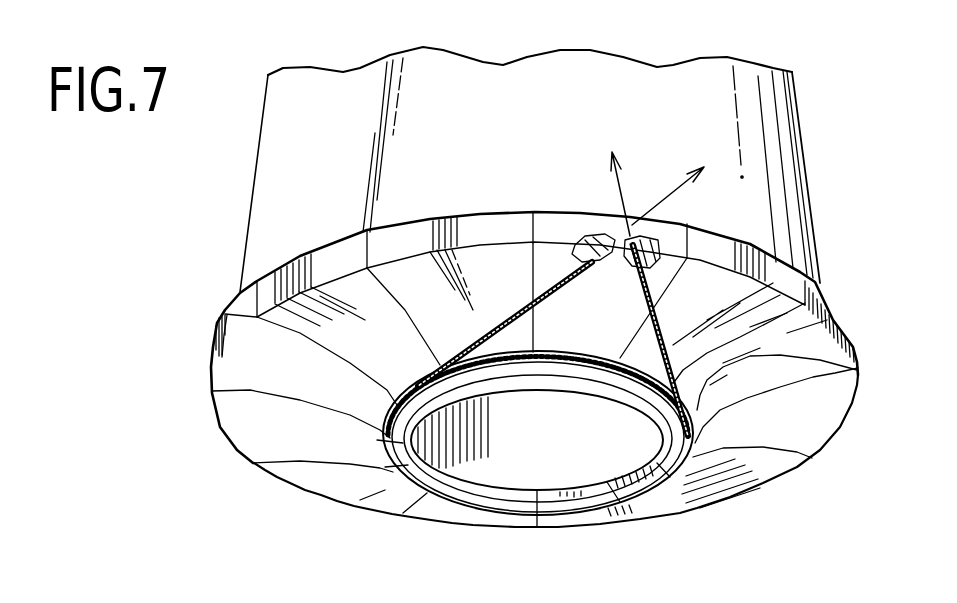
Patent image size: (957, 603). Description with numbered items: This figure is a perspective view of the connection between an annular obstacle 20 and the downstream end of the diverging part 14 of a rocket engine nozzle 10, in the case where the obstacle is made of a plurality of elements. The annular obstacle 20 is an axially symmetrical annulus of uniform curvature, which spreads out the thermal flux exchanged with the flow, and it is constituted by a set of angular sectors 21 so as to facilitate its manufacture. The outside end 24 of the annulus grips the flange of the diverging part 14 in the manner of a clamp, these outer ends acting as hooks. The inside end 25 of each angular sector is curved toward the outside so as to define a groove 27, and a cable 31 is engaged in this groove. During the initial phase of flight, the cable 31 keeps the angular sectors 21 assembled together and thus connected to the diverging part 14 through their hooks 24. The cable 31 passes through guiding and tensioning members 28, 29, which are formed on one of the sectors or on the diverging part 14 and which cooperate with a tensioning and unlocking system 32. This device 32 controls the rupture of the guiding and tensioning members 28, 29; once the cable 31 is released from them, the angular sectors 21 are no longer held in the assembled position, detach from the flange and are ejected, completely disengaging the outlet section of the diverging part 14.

The nozzle 10 is at (243, 196).
The diverging part 14 is at (526, 74).
The annular obstacle 20 is at (204, 414).
The angular sectors 21 is at (265, 447).
The outside end (hooks) 24 is at (230, 318).
The inside end 25 is at (507, 387).
The groove 27 is at (570, 353).
The guiding and tensioning member 28 is at (587, 228).
The guiding and tensioning member 29 is at (650, 240).
The cable 31 is at (558, 352).
The tensioning and unlocking system 32 is at (713, 167).